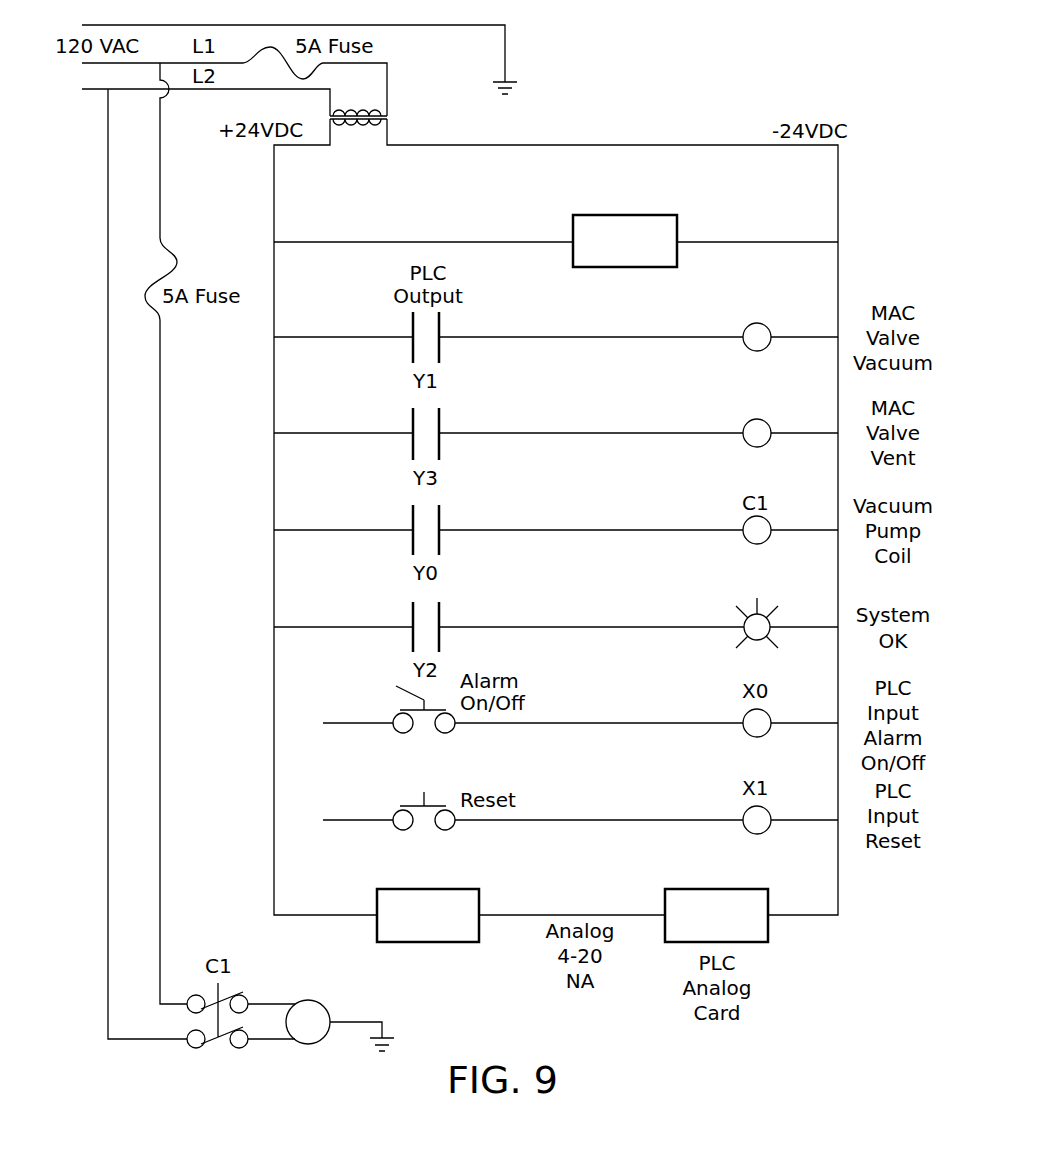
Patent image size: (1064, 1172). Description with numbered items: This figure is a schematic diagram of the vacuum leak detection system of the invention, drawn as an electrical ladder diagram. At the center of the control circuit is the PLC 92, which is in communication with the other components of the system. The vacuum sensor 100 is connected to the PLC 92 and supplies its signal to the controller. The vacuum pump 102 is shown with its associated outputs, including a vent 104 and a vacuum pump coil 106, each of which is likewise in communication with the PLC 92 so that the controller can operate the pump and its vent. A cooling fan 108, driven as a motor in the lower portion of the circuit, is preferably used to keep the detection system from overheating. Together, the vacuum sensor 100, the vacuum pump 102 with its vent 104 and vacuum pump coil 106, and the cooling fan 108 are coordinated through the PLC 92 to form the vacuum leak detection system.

The PLC 92 is at (663, 268).
The vacuum sensor 100 is at (388, 889).
The vacuum pump 102 is at (742, 348).
The vent 104 is at (745, 445).
The vacuum pump coil 106 is at (745, 543).
The cooling fan 108 is at (310, 1002).